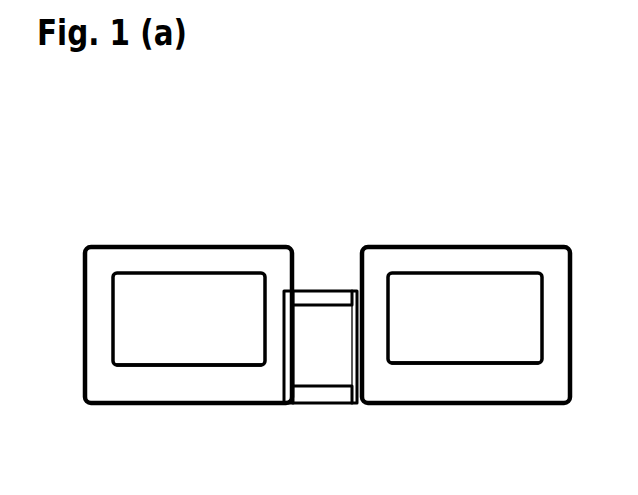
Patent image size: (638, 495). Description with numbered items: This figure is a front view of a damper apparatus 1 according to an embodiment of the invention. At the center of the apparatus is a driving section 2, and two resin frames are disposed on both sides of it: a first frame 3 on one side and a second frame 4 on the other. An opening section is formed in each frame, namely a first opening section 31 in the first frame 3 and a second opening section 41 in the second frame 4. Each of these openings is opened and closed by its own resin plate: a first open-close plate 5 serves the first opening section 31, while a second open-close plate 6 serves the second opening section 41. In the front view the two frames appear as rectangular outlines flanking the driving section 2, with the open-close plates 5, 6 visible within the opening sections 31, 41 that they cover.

The damper apparatus 1 is at (408, 230).
The driving section 2 is at (343, 287).
The first frame 3 is at (207, 262).
The second frame 4 is at (477, 258).
The first open-close plate 5 is at (160, 335).
The first opening section 31 is at (190, 365).
The second opening section 41 is at (422, 363).
The second open-close plate 6 is at (480, 332).